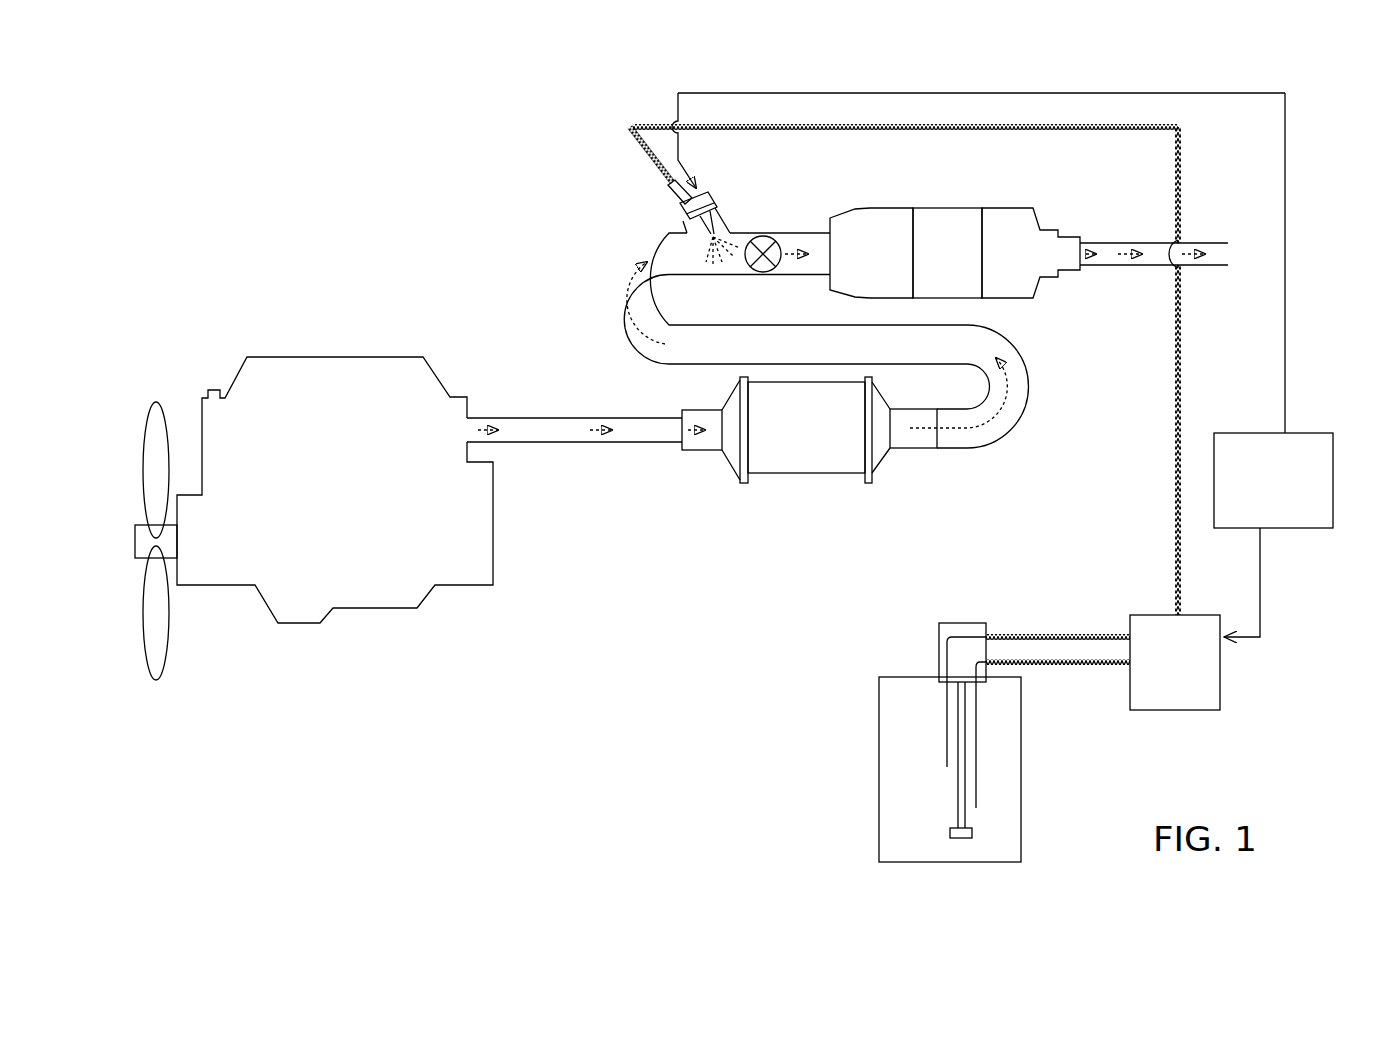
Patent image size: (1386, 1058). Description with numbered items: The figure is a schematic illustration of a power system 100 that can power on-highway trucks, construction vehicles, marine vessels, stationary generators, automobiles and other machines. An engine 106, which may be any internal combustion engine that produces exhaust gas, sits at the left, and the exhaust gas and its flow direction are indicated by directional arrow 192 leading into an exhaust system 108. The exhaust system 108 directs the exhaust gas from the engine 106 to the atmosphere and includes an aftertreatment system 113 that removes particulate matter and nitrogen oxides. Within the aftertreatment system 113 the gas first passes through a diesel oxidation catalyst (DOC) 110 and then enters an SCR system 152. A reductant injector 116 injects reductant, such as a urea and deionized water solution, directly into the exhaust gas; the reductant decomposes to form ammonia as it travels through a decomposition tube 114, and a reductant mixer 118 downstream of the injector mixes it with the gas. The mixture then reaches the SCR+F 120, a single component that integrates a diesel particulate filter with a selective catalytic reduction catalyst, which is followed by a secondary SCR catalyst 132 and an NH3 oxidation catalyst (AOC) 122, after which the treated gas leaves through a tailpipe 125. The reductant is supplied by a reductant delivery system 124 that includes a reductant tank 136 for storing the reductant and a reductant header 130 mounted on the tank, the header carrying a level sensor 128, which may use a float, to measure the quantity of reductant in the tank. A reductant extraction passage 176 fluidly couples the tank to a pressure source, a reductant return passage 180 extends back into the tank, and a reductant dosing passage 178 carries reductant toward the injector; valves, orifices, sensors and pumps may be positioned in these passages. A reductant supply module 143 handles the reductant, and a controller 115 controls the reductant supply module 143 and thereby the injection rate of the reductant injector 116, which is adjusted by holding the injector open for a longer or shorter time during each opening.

The power system 100 is at (558, 740).
The engine 106 is at (333, 357).
The directional arrow 192 is at (596, 426).
The diesel oxidation catalyst (DOC) 110 is at (783, 473).
The aftertreatment system 113 is at (793, 575).
The exhaust system 108 is at (593, 263).
The reductant injector 116 is at (714, 196).
The decomposition tube 114 is at (728, 275).
The reductant mixer 118 is at (770, 235).
The SCR+F 120 is at (887, 208).
The secondary SCR catalyst 132 is at (950, 208).
The NH3 oxidation catalyst (AOC) 122 is at (1012, 208).
The tailpipe 125 is at (1197, 265).
The SCR system 152 is at (1214, 161).
The reductant dosing passage 178 is at (1181, 395).
The controller 115 is at (1310, 433).
The reductant supply module 143 is at (1150, 710).
The reductant return passage 180 is at (1030, 636).
The reductant extraction passage 176 is at (1042, 663).
The reductant header 130 is at (967, 623).
The reductant tank 136 is at (1021, 752).
The level sensor 128 is at (960, 838).
The reductant delivery system 124 is at (1093, 820).